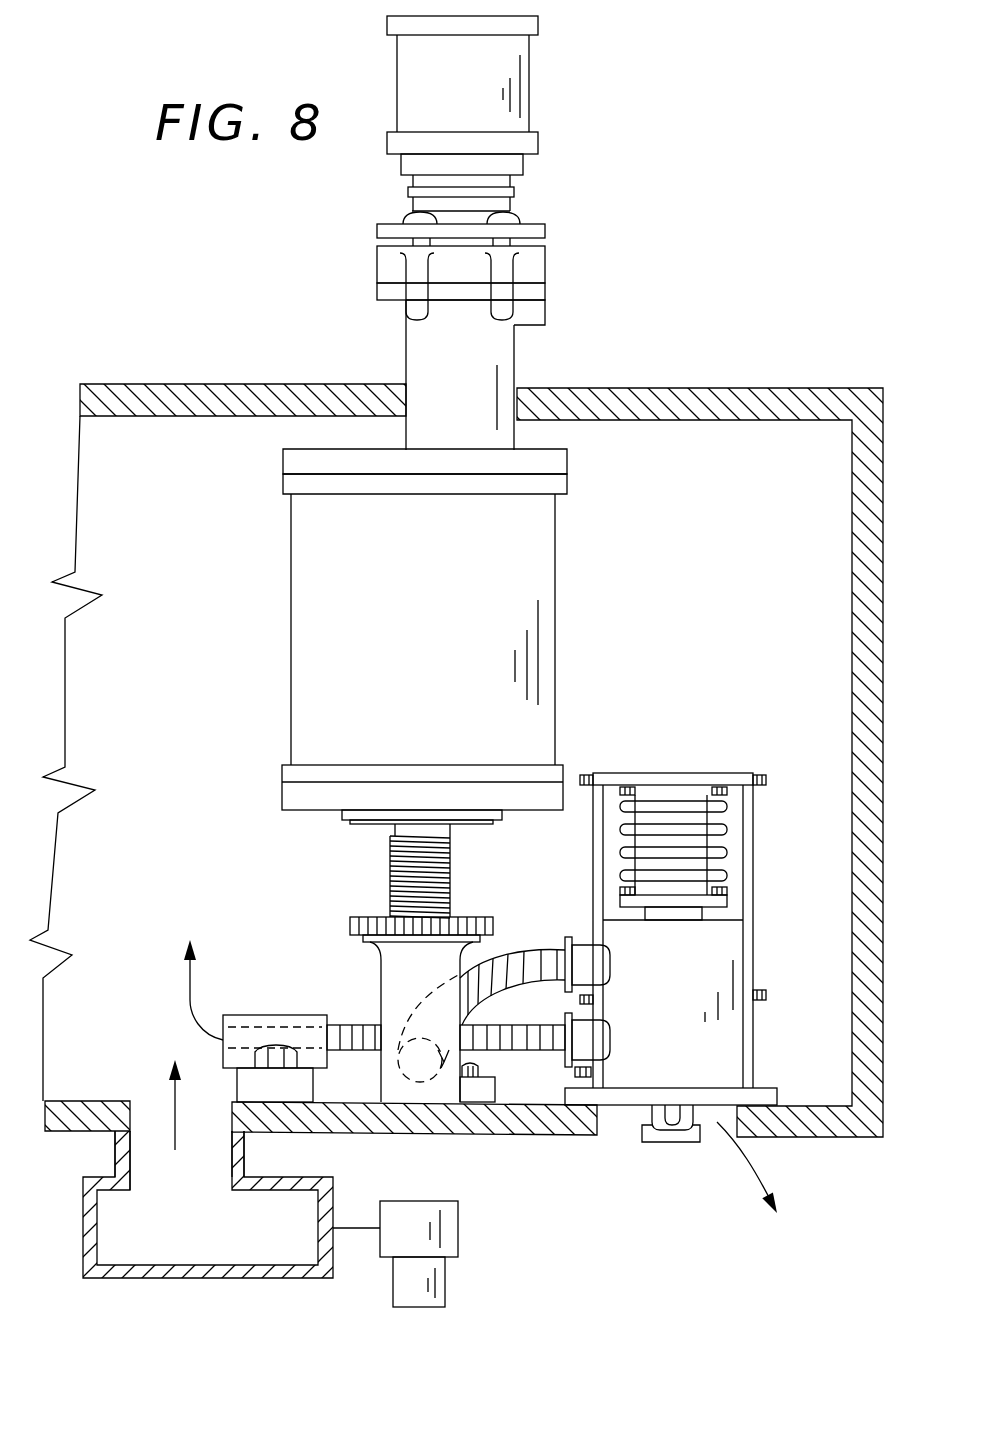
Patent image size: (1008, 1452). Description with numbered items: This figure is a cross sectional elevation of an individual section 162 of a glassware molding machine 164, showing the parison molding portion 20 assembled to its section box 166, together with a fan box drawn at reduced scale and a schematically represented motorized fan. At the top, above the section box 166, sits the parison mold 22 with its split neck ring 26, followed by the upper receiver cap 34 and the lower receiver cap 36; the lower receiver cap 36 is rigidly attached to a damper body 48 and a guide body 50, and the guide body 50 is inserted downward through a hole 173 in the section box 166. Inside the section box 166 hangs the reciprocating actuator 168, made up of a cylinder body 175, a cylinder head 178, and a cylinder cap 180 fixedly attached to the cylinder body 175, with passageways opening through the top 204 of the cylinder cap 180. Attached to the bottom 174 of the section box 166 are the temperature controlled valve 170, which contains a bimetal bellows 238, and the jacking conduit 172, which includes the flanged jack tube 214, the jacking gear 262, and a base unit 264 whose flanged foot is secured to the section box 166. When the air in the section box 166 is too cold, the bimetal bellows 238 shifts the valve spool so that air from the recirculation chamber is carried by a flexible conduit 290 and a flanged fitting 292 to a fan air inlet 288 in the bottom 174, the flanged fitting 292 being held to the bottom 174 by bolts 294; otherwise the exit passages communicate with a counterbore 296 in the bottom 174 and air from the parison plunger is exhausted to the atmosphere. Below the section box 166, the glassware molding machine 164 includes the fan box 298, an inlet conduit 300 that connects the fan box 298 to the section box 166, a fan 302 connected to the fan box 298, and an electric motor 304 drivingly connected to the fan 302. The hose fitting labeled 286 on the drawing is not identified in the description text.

The parison molding portion 20 is at (690, 124).
The parison mold 22 is at (530, 95).
The split neck ring 26 is at (523, 175).
The upper receiver cap 34 is at (517, 193).
The lower receiver cap 36 is at (545, 238).
The damper body 48 is at (545, 265).
The guide body 50 is at (545, 313).
The individual section 162 is at (690, 253).
The glassware molding machine 164 is at (785, 263).
The section box 166 is at (613, 387).
The reciprocating actuator 168 is at (594, 623).
The temperature controlled valve 170 is at (703, 744).
The jacking conduit 172 is at (251, 864).
The hole 173 is at (408, 356).
The bottom 174 is at (780, 1140).
The cylinder body 175 is at (291, 655).
The cylinder head 178 is at (282, 795).
The cylinder cap 180 is at (282, 460).
The top 204 is at (312, 448).
The flanged jack tube 214 is at (390, 858).
The bimetal bellows 238 is at (727, 845).
The jacking gear 262 is at (350, 915).
The base unit 264 is at (381, 977).
The flexible conduit 286 is at (563, 892).
The fan air inlet 288 is at (140, 1106).
The flexible conduit 290 is at (352, 1025).
The flanged fitting 292 is at (283, 1015).
The bolts 294 is at (277, 1043).
The counterbore 296 is at (600, 1117).
The fan box 298 is at (203, 1229).
The inlet conduit 300 is at (245, 1160).
The fan 302 is at (458, 1228).
The electric motor 304 is at (445, 1290).